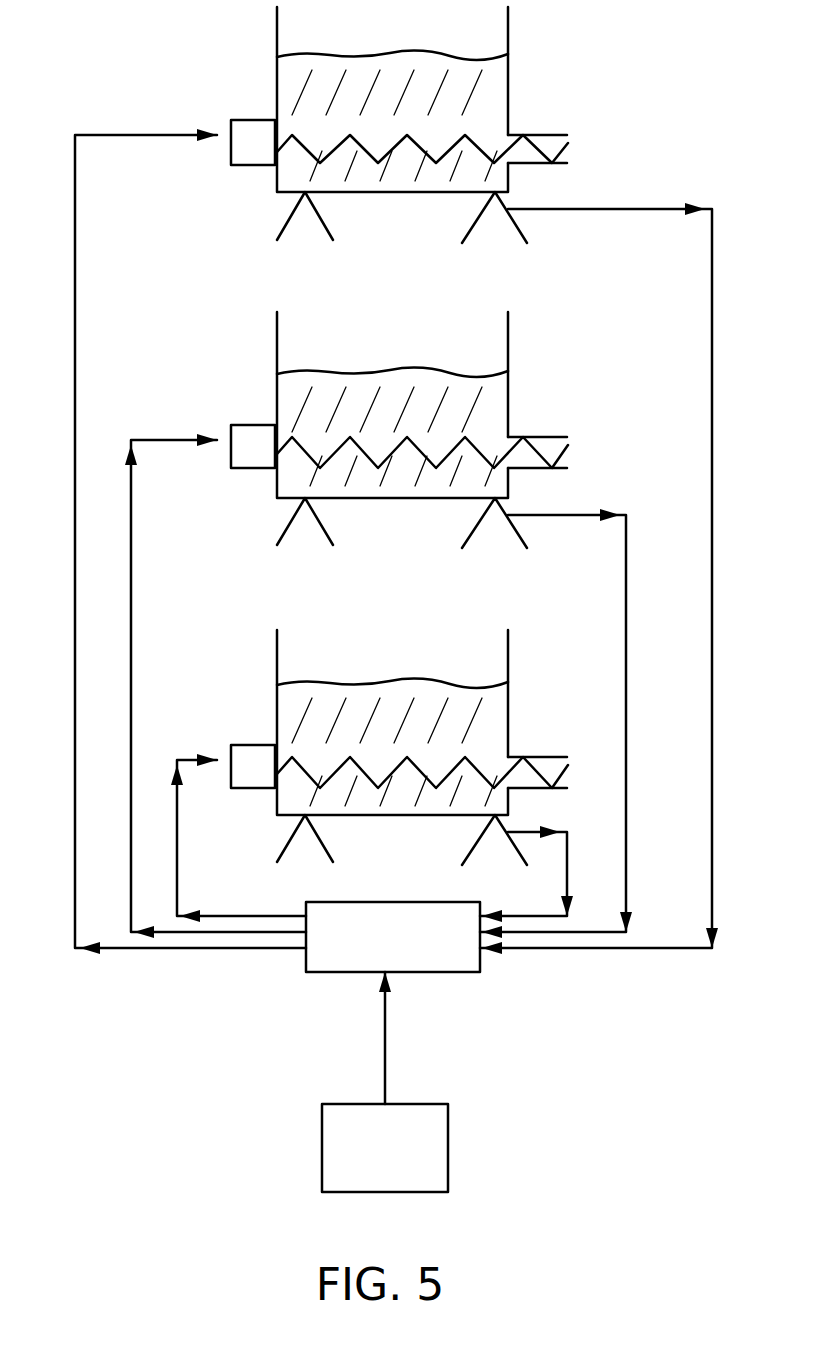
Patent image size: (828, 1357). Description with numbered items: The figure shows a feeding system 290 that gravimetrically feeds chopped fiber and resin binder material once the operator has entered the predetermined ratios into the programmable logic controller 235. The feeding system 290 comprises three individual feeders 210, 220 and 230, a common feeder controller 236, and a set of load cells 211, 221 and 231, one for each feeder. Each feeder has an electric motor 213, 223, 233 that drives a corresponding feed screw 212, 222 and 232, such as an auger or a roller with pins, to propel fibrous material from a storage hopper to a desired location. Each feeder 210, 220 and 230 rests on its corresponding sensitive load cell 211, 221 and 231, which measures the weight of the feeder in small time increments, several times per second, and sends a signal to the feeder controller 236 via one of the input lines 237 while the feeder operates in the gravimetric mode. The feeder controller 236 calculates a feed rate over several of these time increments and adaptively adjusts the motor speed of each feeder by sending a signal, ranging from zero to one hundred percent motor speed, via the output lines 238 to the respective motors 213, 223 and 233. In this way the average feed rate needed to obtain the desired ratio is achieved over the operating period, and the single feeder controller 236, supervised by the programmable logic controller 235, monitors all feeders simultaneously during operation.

The feeder 210 is at (370, 41).
The load cell 211 is at (485, 215).
The feed screw 212 is at (545, 135).
The electric motor 213 is at (240, 118).
The feeder 220 is at (370, 359).
The load cell 221 is at (485, 520).
The feed screw 222 is at (545, 437).
The electric motor 223 is at (258, 425).
The feeder 230 is at (370, 676).
The load cell 231 is at (485, 837).
The feed screw 232 is at (545, 757).
The electric motor 233 is at (258, 745).
The programmable logic controller 235 is at (448, 1143).
The feeder controller 236 is at (393, 937).
The input lines 237 is at (563, 950).
The output lines 238 is at (205, 916).
The feeding system 290 is at (168, 1062).